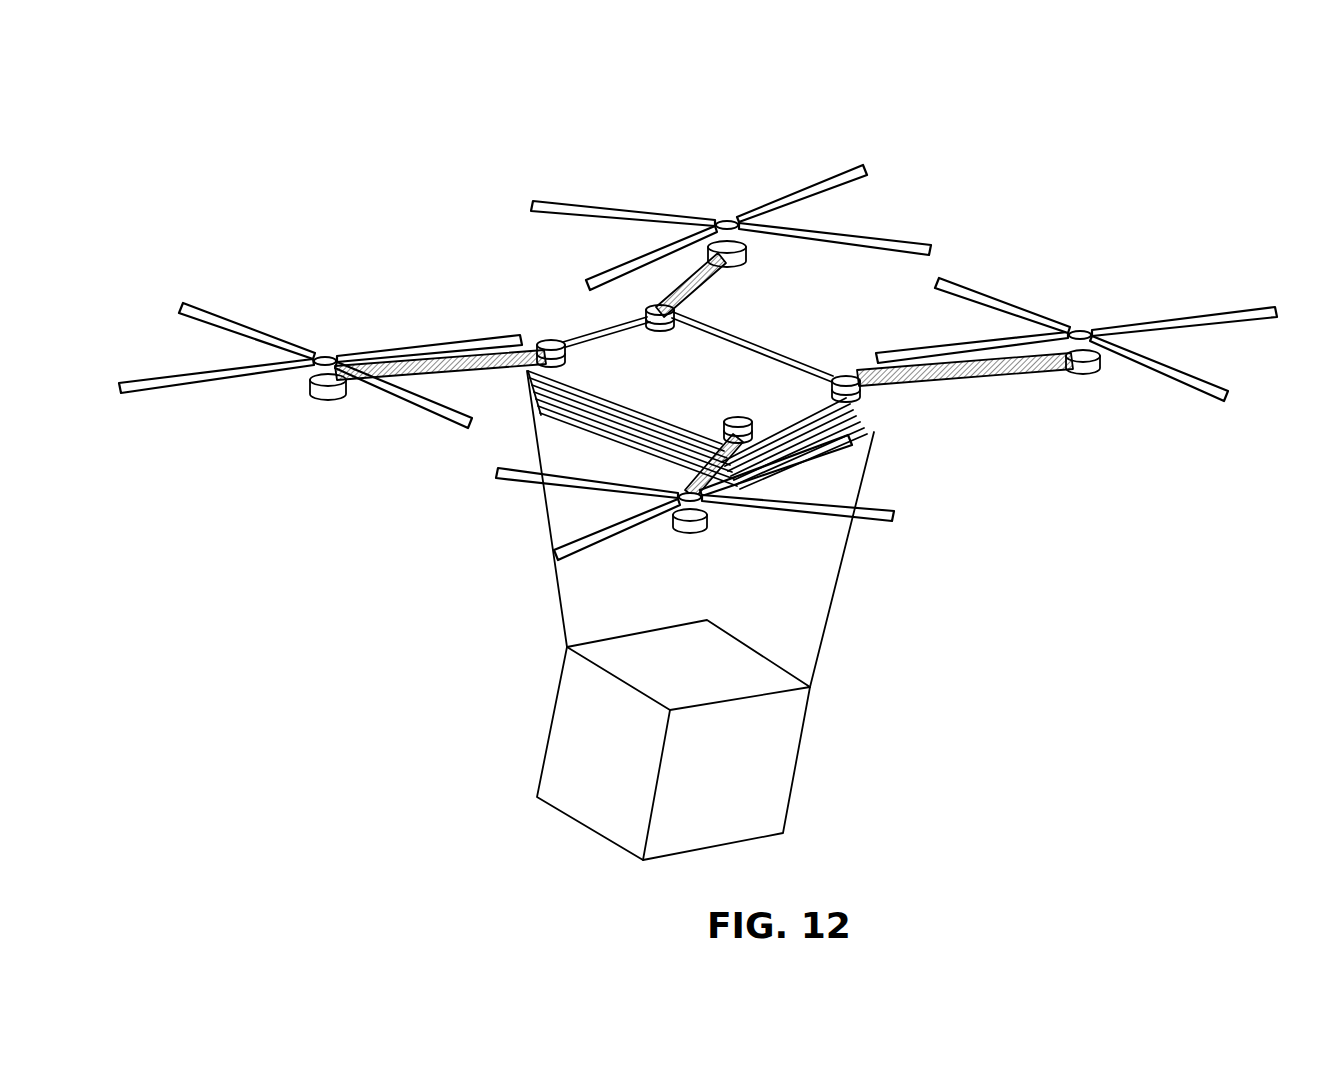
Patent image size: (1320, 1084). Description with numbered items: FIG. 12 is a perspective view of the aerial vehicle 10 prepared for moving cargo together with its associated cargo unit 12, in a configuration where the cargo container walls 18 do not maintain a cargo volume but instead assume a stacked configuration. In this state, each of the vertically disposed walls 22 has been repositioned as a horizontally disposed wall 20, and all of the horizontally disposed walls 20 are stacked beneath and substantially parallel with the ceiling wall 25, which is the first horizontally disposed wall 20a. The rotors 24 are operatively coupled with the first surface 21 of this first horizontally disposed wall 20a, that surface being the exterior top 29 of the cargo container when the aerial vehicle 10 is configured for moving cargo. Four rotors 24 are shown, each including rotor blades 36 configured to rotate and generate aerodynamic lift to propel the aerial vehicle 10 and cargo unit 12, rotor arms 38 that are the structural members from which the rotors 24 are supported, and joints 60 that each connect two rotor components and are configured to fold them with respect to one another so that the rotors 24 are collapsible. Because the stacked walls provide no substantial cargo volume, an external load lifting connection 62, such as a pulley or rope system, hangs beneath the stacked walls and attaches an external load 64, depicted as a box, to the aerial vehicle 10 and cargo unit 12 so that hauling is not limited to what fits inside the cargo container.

The aerial vehicle 10 is at (1058, 122).
The cargo unit 12 is at (698, 503).
The cargo container walls 18 is at (658, 341).
The horizontally disposed walls 20 is at (613, 360).
The first horizontally disposed wall 20a is at (878, 524).
The first surface 21 is at (904, 458).
The vertically disposed walls 22 is at (553, 500).
The rotors 24 is at (700, 293).
The ceiling wall 25 is at (893, 518).
The exterior top 29 is at (813, 427).
The rotor blades 36 is at (780, 205).
The rotor arms 38 is at (660, 308).
The joints 60 is at (717, 222).
The external load lifting connection 62 is at (830, 617).
The external load 64 is at (737, 752).